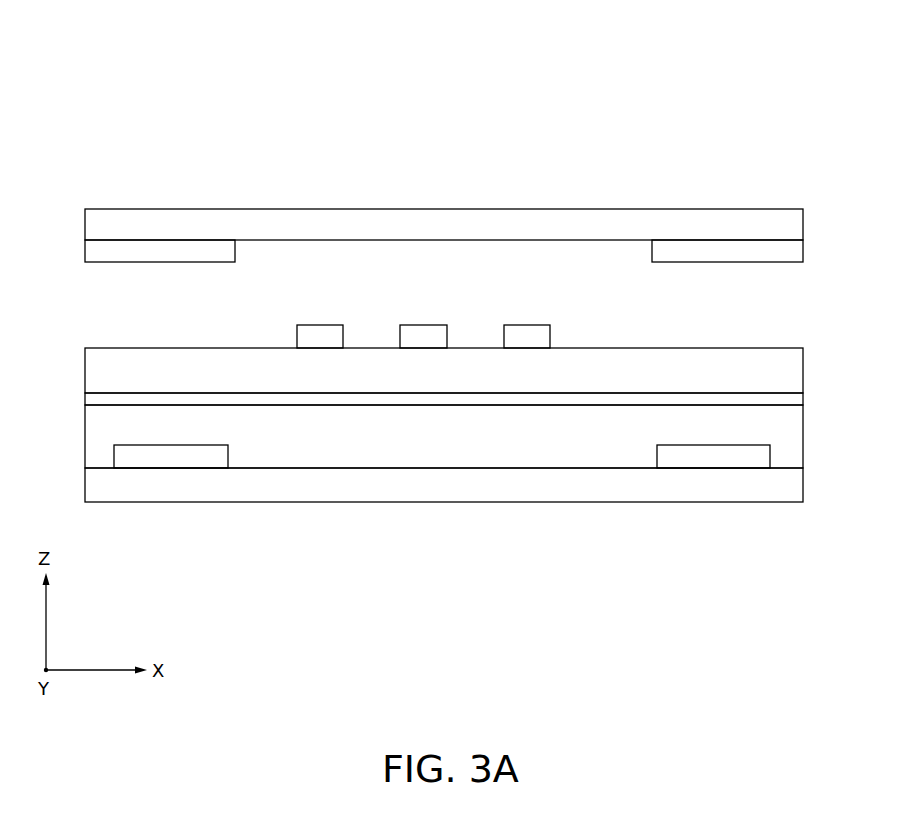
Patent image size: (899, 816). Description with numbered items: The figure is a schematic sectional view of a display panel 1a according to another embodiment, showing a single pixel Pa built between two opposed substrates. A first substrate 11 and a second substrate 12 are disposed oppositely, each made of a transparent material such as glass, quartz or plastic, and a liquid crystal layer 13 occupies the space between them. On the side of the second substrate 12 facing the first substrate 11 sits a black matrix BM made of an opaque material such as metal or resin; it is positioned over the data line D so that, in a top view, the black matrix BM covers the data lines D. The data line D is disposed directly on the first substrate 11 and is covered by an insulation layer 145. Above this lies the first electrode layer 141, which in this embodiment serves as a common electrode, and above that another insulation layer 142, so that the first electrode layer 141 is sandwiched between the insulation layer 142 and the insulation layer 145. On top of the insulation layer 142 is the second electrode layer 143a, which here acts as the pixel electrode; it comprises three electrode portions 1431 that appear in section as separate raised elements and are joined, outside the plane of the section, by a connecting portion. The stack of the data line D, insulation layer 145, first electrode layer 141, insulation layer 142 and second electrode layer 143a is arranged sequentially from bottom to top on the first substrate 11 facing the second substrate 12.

The display panel 1a is at (208, 56).
The pixel Pa is at (279, 263).
The second substrate 12 is at (86, 226).
The black matrix BM is at (444, 251).
The liquid crystal layer 13 is at (125, 296).
The insulation layer 142 is at (97, 372).
The first electrode layer 141 is at (93, 400).
The insulation layer 145 is at (97, 425).
The data line D is at (442, 456).
The first substrate 11 is at (92, 486).
The second electrode layer 143a is at (288, 334).
The electrode portions 1431 is at (420, 325).